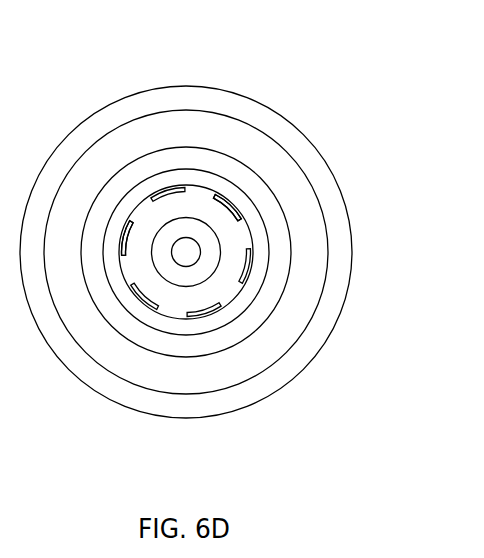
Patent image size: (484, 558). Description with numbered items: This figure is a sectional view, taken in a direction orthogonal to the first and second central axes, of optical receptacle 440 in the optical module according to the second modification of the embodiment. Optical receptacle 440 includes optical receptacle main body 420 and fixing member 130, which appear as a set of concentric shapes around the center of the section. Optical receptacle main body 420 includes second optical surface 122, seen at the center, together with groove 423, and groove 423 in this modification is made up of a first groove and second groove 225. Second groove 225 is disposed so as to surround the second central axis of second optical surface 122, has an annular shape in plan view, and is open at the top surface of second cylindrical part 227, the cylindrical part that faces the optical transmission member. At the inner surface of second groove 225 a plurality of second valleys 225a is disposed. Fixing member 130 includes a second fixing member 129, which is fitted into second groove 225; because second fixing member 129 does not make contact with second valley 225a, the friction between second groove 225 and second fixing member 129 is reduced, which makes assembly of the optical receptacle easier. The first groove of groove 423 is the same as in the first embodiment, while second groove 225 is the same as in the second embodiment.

The optical receptacle 440 is at (380, 48).
The optical receptacle main body 420 is at (67, 374).
The groove 423 is at (260, 218).
The second groove 225 is at (217, 198).
The second valley 225a is at (252, 232).
The fixing member 130 is at (177, 165).
The second fixing member 129 is at (177, 190).
The second cylindrical part 227 is at (124, 242).
The second optical surface 122 is at (186, 252).